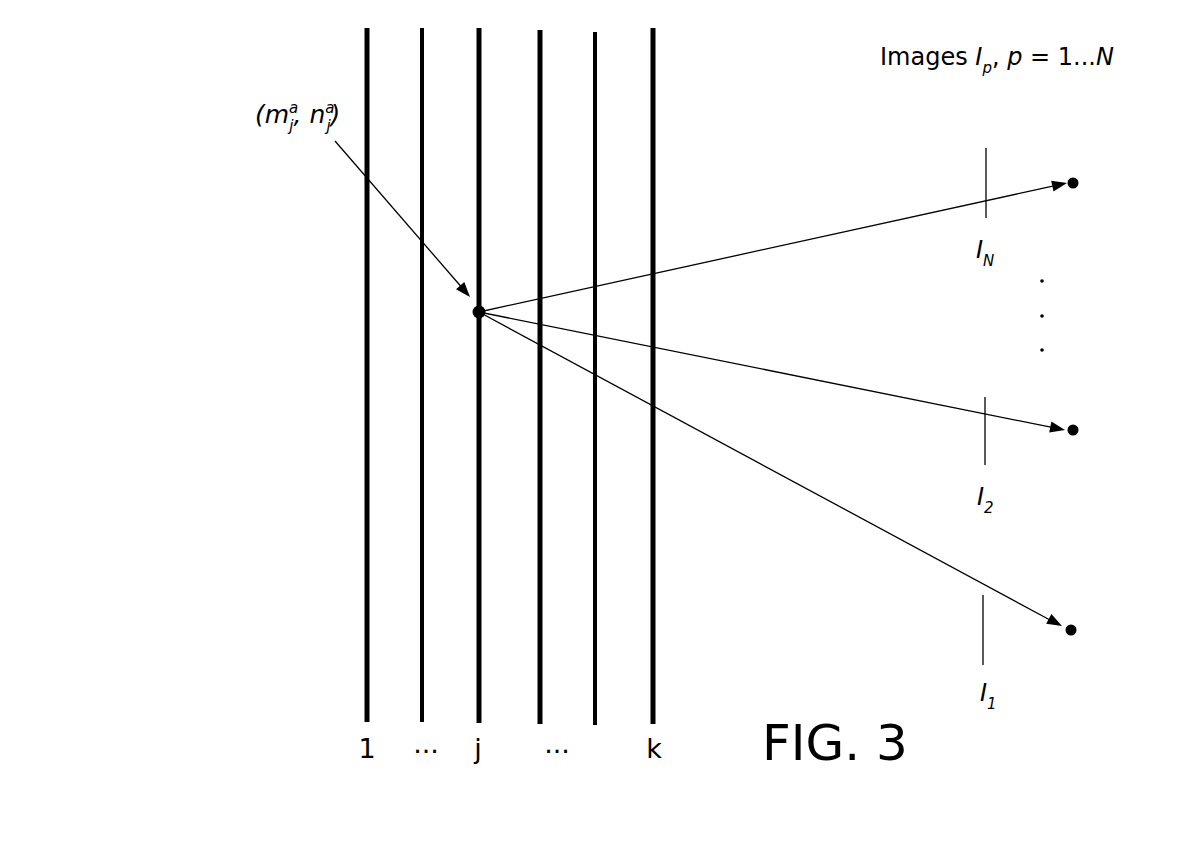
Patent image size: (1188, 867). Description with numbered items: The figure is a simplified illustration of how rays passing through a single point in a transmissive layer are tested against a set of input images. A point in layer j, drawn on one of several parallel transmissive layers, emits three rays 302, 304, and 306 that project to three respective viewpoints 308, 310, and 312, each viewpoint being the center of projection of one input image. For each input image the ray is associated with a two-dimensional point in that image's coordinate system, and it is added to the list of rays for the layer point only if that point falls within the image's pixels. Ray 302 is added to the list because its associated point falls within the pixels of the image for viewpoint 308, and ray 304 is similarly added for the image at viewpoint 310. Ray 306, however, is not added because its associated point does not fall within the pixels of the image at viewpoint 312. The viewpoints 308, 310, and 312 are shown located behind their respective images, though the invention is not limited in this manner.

The ray 302 is at (875, 227).
The ray 304 is at (838, 385).
The ray 306 is at (808, 487).
The viewpoint 308 is at (1079, 183).
The viewpoint 310 is at (1079, 430).
The viewpoint 312 is at (1077, 630).